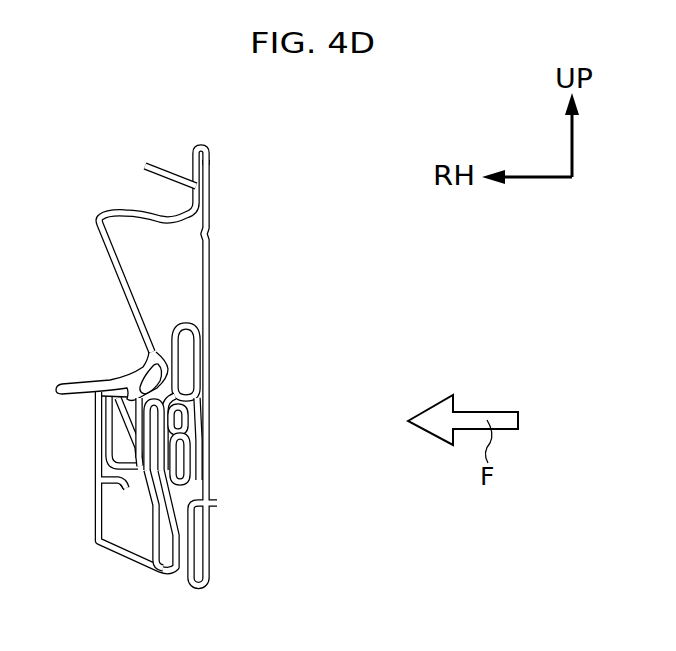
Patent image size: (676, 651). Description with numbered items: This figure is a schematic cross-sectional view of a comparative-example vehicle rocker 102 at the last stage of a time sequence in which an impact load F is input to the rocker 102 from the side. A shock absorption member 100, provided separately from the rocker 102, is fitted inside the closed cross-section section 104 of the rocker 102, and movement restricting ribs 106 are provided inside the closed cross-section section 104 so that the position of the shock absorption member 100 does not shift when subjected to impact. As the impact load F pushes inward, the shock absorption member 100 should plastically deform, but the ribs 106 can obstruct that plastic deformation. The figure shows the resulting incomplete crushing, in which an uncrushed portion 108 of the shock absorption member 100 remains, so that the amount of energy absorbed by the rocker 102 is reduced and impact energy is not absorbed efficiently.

The shock absorption member 100 is at (157, 547).
The rocker 102 is at (213, 322).
The closed cross-section section 104 is at (128, 522).
The movement restricting ribs 106 is at (98, 471).
The uncrushed portion 108 is at (117, 487).